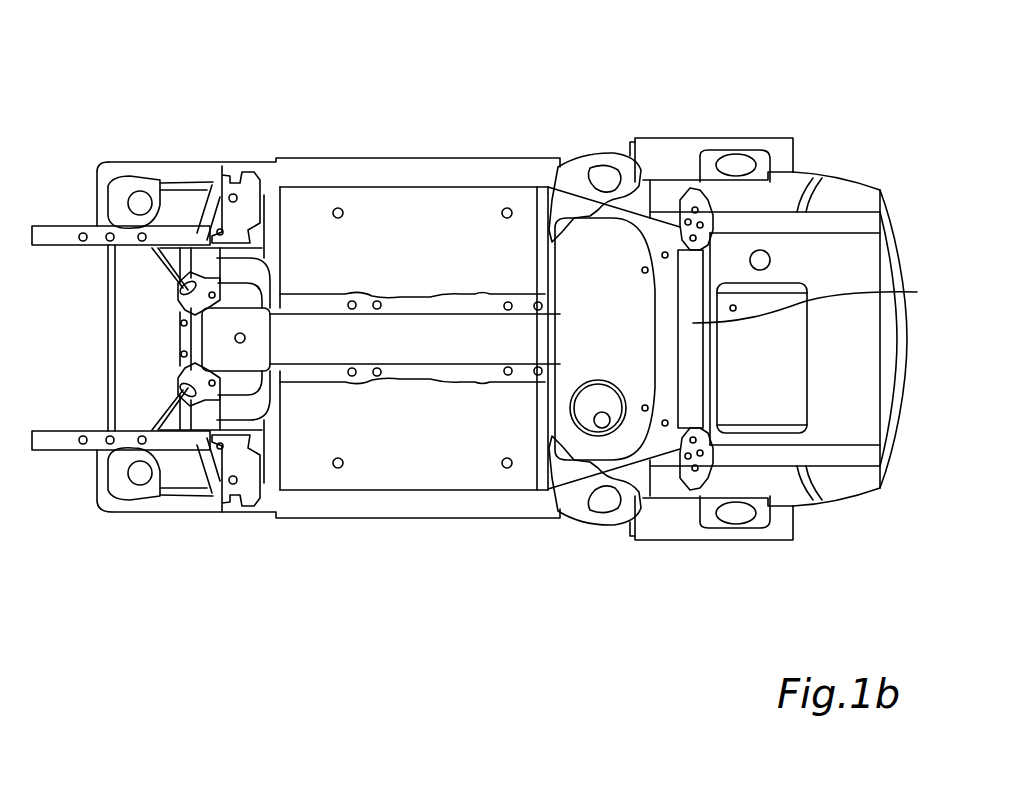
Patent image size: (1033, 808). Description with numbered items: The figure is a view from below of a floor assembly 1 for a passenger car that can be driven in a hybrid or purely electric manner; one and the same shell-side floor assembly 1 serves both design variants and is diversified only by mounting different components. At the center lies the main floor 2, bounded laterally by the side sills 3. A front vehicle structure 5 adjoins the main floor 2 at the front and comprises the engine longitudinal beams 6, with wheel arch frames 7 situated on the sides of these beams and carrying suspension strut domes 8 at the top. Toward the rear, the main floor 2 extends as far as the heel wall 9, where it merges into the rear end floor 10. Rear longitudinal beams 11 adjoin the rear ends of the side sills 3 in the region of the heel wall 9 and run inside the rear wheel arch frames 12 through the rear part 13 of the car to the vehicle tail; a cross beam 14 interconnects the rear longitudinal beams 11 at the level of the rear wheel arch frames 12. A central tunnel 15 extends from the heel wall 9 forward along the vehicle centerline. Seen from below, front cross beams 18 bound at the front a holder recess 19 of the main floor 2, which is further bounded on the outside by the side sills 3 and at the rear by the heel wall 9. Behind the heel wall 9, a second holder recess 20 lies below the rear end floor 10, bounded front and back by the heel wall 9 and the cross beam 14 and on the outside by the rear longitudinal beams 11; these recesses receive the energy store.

The floor assembly 1 is at (615, 108).
The main floor 2 is at (352, 115).
The side sills 3 is at (477, 157).
The front vehicle structure 5 is at (165, 153).
The engine longitudinal beams 6 is at (50, 240).
The wheel arch frames 7 is at (178, 503).
The suspension strut domes 8 is at (126, 494).
The heel wall 9 is at (526, 520).
The rear end floor 10 is at (616, 236).
The rear longitudinal beams 11 is at (560, 157).
The rear wheel arch frames 12 is at (781, 162).
The rear part 13 is at (890, 145).
The cross beam 14 is at (910, 293).
The central tunnel 15 is at (401, 343).
The front cross beams 18 is at (276, 157).
The holder recess 19 is at (419, 452).
The holder recess 20 is at (627, 425).